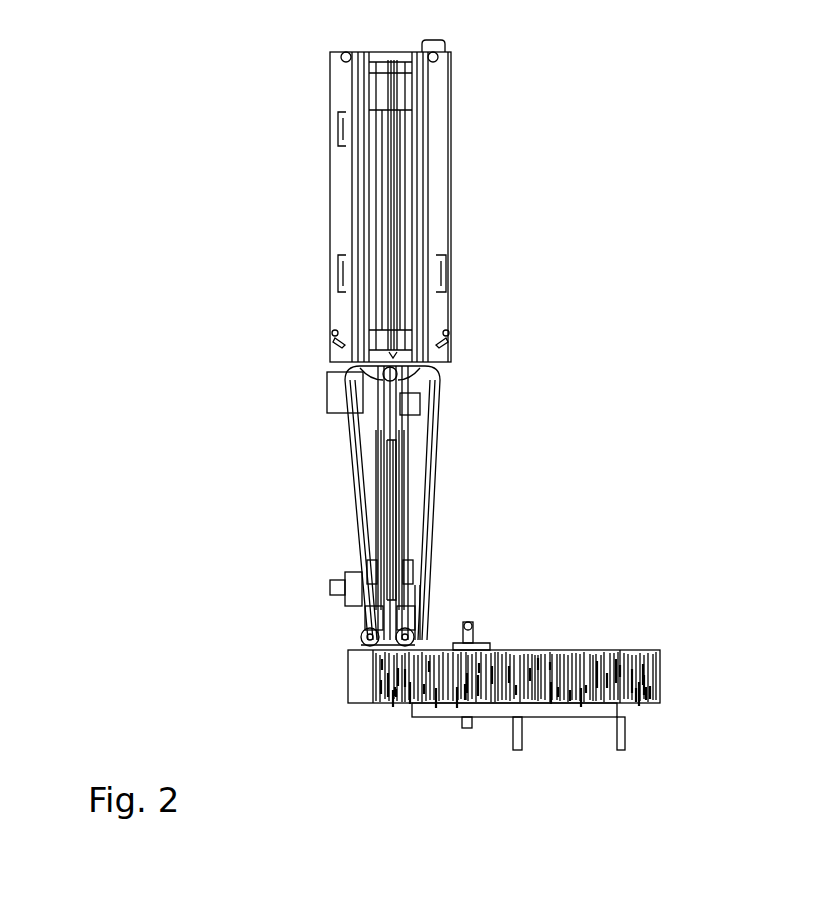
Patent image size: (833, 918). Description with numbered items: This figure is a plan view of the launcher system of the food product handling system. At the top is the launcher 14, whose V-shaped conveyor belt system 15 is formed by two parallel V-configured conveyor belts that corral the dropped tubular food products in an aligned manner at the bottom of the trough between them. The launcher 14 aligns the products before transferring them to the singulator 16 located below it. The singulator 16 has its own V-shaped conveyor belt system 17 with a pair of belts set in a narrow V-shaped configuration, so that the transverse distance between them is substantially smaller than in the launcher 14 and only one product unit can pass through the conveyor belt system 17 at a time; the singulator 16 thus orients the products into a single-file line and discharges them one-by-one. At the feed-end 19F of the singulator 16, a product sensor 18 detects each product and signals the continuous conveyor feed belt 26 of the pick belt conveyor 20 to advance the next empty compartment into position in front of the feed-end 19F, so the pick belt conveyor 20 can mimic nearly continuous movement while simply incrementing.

The launcher 14 is at (427, 271).
The V-shaped conveyor belt system 15 is at (391, 245).
The singulator 16 is at (395, 471).
The V-shaped conveyor belt system 17 is at (393, 442).
The product sensor 18 is at (357, 625).
The feed-end 19F is at (413, 625).
The pick belt conveyor 20 is at (533, 655).
The conveyor feed belt 26 is at (560, 710).